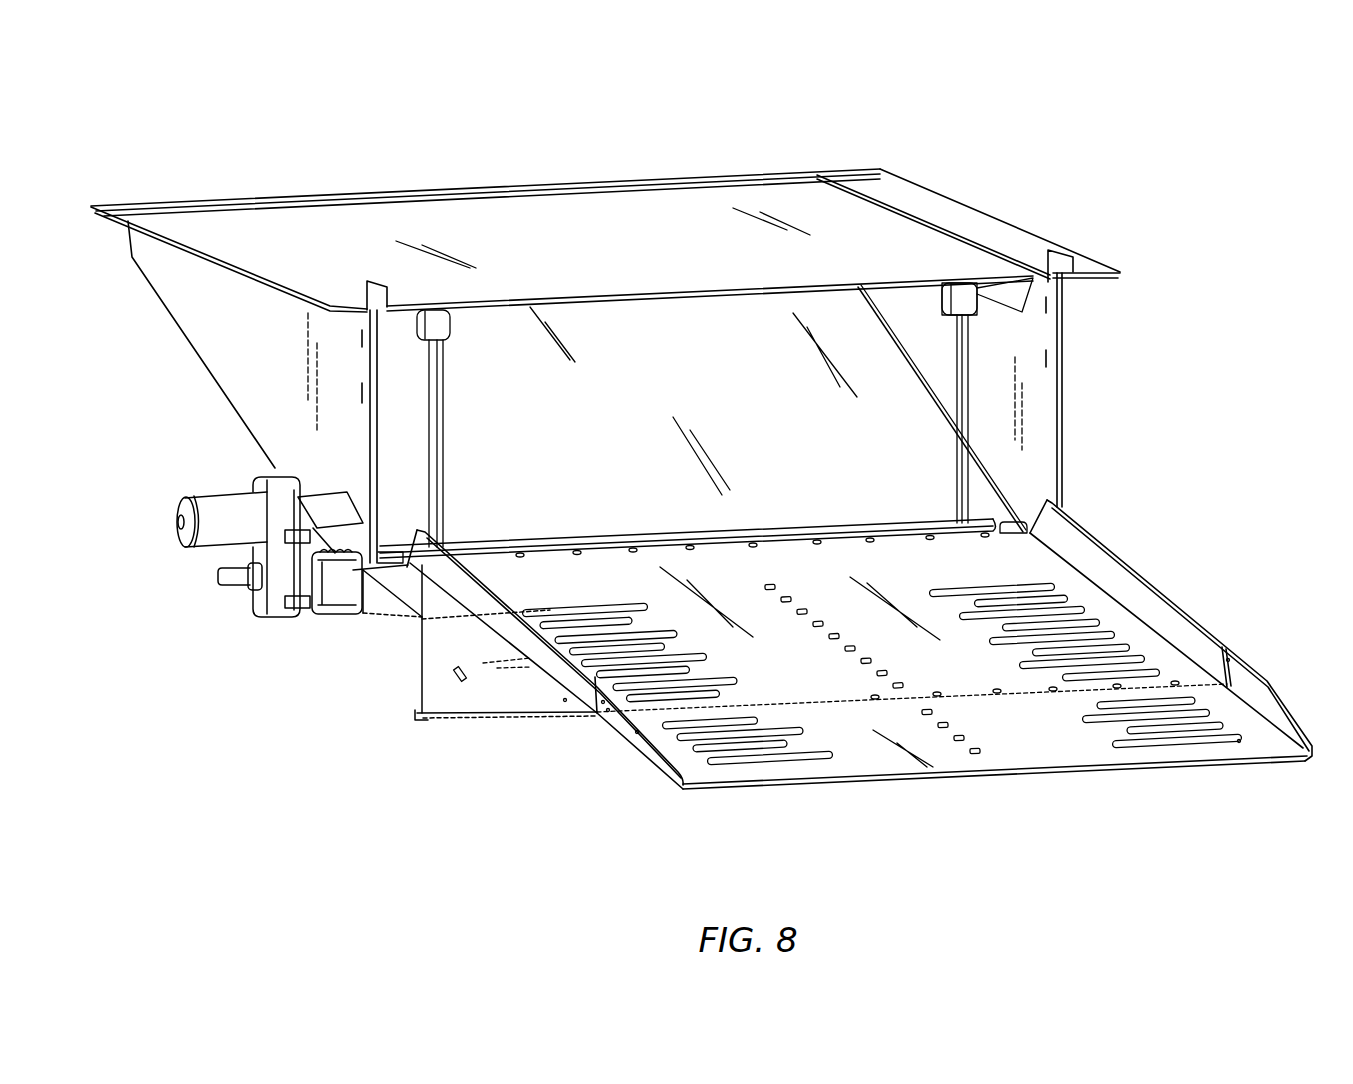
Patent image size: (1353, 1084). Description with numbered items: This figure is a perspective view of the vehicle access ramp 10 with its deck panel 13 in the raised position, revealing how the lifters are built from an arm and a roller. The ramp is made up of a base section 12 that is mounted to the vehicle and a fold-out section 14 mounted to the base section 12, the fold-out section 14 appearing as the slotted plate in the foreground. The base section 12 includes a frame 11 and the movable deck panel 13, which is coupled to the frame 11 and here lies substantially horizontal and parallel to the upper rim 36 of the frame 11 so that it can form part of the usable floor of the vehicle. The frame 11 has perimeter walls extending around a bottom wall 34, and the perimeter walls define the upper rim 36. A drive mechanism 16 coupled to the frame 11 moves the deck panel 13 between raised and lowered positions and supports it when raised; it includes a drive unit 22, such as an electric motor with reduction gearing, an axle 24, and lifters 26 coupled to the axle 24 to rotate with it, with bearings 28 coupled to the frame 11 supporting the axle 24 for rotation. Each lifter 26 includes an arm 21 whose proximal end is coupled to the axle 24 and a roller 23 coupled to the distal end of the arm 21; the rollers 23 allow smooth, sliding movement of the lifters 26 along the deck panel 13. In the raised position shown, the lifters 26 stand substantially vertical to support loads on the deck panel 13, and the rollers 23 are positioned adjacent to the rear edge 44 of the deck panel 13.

The vehicle access ramp 10 is at (1120, 100).
The frame 11 is at (1060, 307).
The base section 12 is at (1070, 328).
The deck panel 13 is at (717, 222).
The fold-out section 14 is at (1222, 618).
The drive mechanism 16 is at (215, 612).
The arm 21 is at (972, 425).
The drive unit 22 is at (281, 640).
The roller 23 is at (933, 312).
The axle 24 is at (412, 384).
The lifter 26 is at (985, 380).
The bearing 28 is at (1030, 548).
The bottom wall 34 is at (658, 402).
The upper rim 36 is at (1088, 264).
The rear edge 44 is at (640, 293).